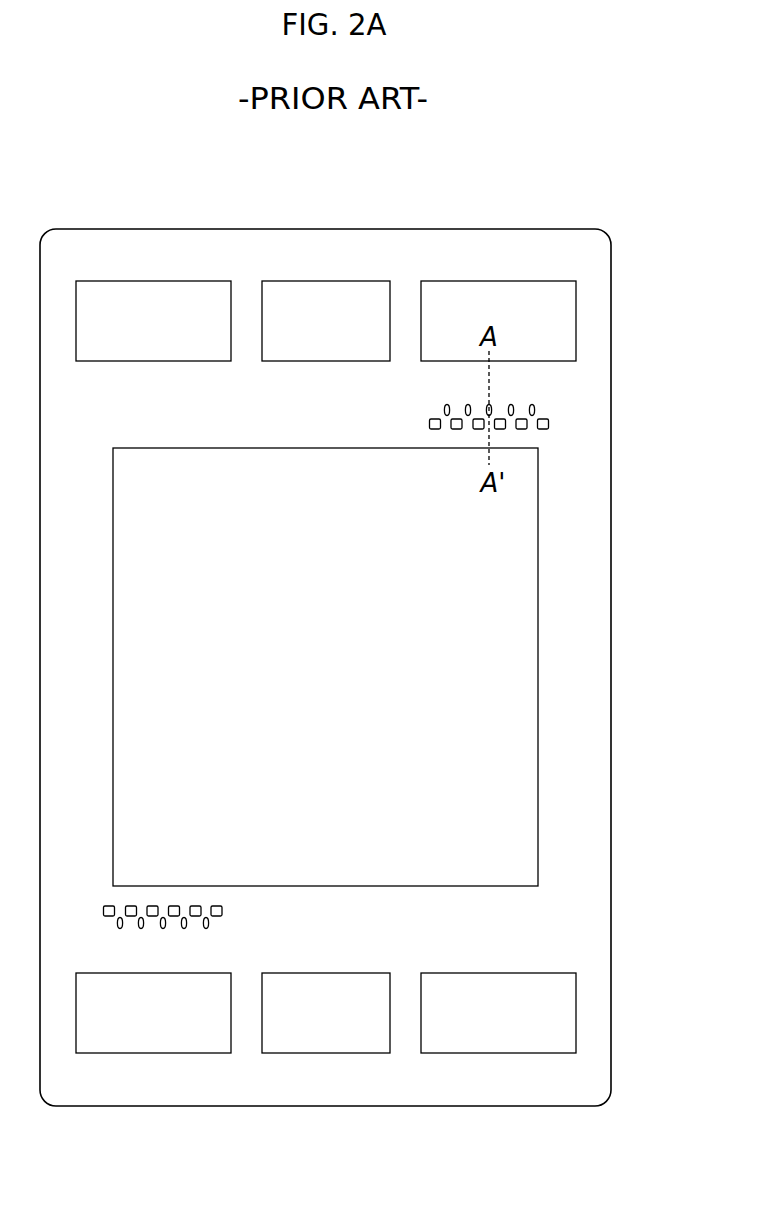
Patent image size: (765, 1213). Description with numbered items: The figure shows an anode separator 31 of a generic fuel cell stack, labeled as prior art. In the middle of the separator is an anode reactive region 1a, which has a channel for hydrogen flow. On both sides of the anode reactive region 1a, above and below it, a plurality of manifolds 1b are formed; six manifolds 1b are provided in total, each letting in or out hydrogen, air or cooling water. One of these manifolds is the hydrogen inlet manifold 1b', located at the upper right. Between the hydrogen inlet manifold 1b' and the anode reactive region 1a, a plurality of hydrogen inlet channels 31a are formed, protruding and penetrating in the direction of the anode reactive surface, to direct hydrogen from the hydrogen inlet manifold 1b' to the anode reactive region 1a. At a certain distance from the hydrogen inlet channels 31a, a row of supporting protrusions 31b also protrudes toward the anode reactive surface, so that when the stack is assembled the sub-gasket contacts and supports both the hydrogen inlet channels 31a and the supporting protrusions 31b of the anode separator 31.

The anode separator 31 is at (125, 196).
The anode reactive region 1a is at (538, 667).
The manifolds 1b is at (326, 667).
The hydrogen inlet manifold 1b' is at (498, 259).
The hydrogen inlet channels 31a is at (515, 407).
The supporting protrusions 31b is at (527, 428).